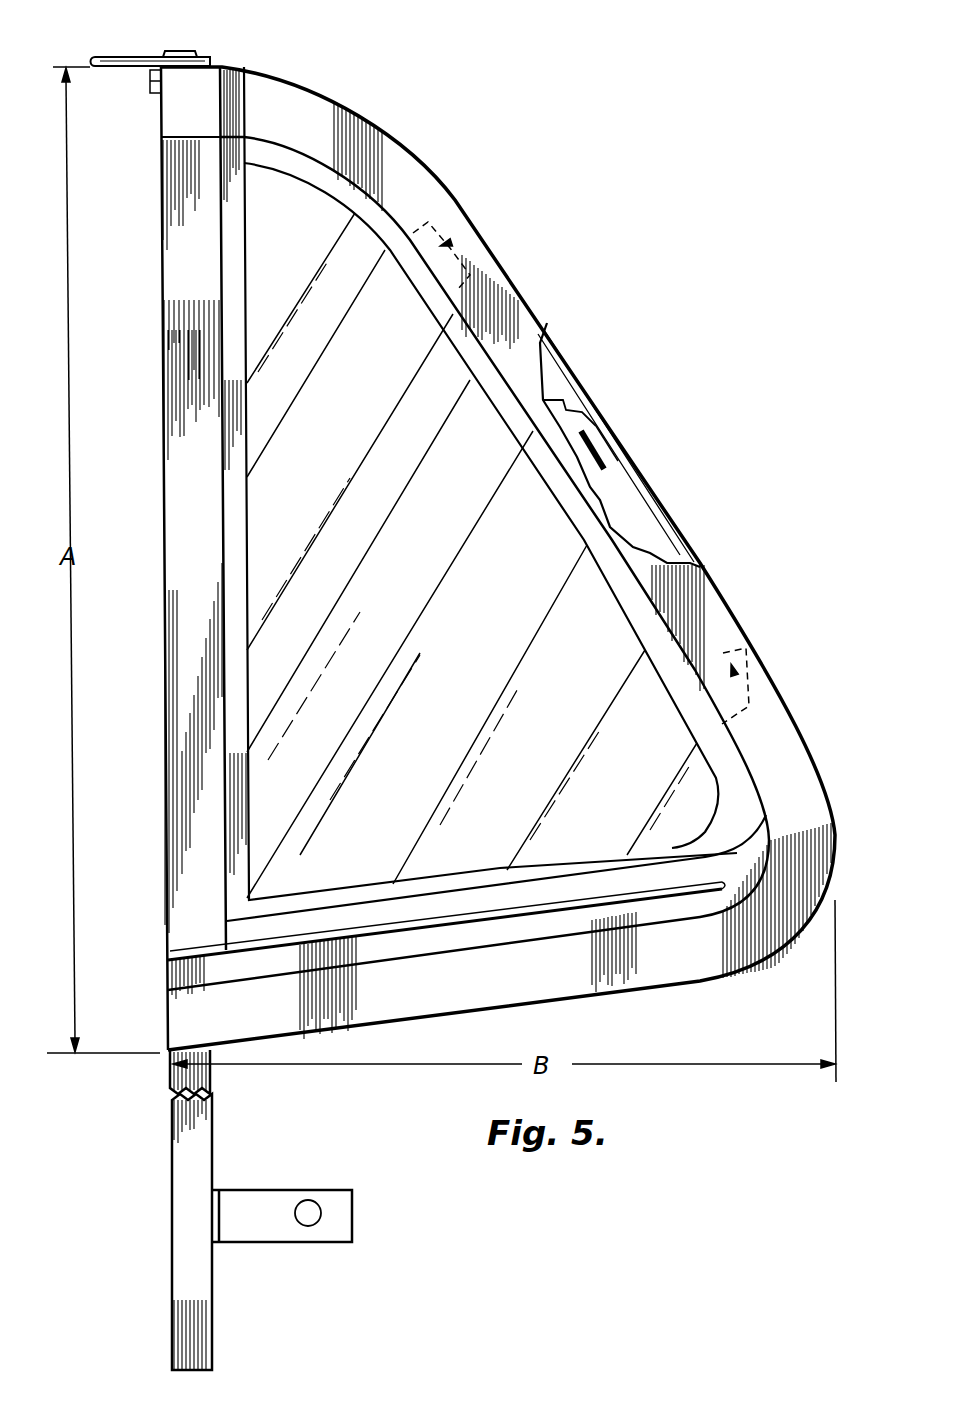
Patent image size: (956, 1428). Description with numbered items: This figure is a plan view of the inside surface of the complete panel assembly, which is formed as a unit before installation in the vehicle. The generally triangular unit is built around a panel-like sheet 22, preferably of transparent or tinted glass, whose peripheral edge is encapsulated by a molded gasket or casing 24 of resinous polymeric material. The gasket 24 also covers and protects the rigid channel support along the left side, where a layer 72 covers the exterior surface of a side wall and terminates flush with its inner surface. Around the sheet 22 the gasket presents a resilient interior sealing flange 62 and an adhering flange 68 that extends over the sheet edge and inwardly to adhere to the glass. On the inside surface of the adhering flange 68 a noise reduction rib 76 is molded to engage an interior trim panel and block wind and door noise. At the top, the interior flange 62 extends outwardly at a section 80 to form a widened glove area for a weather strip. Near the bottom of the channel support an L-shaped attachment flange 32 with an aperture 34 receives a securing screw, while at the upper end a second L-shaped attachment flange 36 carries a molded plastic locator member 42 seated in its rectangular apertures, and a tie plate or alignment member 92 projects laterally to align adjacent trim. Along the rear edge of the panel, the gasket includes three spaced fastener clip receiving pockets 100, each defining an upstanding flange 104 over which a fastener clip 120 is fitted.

The sheet 22 is at (487, 637).
The molded gasket or casing 24 is at (424, 142).
The L-shaped attachment flange 32 is at (262, 1226).
The aperture 34 is at (308, 1212).
The attachment flange 36 is at (112, 56).
The locator member 42 is at (182, 36).
The interior sealing flange 62 is at (325, 112).
The adhering flange 68 is at (415, 279).
The layer 72 is at (201, 507).
The noise reduction rib 76 is at (607, 900).
The section 80 is at (178, 135).
The tie plate or alignment member 92 is at (148, 84).
The fastener clip receiving pocket 100 is at (623, 453).
The upstanding flange 104 is at (565, 418).
The fastener clip 120 is at (490, 233).